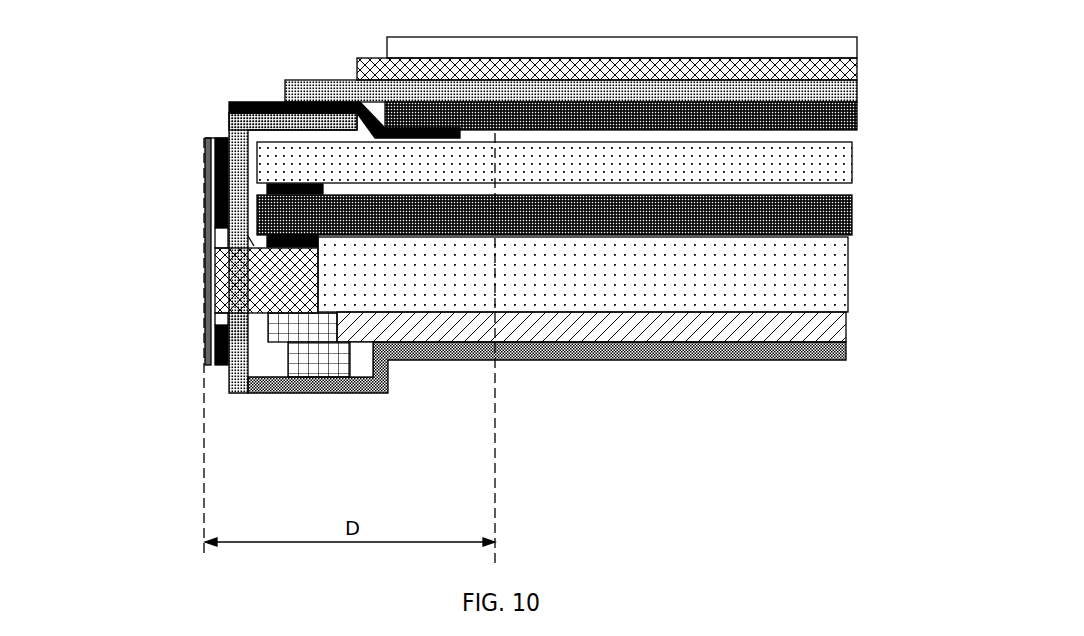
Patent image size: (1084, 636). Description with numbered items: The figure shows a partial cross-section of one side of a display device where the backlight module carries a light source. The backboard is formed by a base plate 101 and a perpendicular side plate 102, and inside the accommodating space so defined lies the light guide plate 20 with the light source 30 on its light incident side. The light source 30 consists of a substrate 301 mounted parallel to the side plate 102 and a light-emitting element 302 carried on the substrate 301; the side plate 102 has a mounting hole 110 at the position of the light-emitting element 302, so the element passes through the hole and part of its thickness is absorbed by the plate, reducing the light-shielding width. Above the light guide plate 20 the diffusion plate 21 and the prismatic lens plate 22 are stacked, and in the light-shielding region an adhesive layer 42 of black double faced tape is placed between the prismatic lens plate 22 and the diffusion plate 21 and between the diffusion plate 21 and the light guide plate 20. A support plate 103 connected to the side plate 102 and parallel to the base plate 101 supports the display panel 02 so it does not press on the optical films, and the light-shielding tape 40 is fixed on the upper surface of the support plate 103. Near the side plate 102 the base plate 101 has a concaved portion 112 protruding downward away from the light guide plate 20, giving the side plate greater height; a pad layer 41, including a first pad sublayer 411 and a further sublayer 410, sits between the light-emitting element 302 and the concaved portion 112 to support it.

The display panel 02 is at (860, 37).
The light guide plate 20 is at (825, 283).
The diffusion plate 21 is at (828, 208).
The prismatic lens plate 22 is at (828, 155).
The light source 30 is at (194, 268).
The substrate 301 is at (213, 242).
The light-emitting element 302 is at (216, 276).
The light-shielding tape 40 is at (270, 101).
The pad layer 41 is at (315, 398).
The first heat conducting layer 410 is at (308, 333).
The first pad sublayer 411 is at (338, 355).
The adhesive layer 42 is at (267, 184).
The base plate 101 is at (628, 352).
The side plate 102 is at (238, 398).
The support plate 103 is at (229, 118).
The mounting hole 110 is at (230, 322).
The concaved portion 112 is at (365, 370).